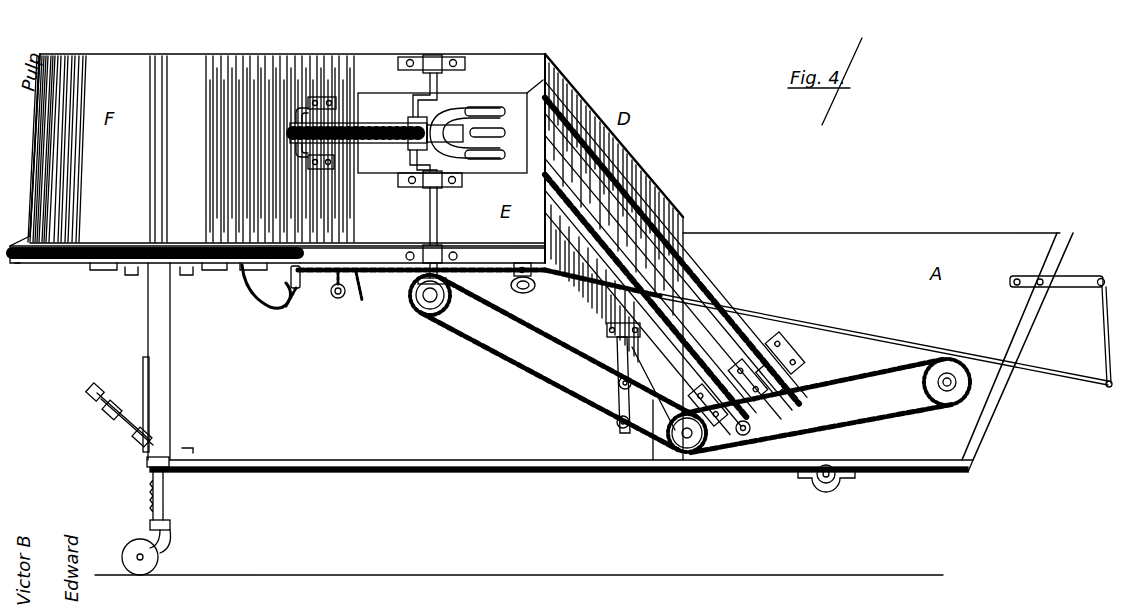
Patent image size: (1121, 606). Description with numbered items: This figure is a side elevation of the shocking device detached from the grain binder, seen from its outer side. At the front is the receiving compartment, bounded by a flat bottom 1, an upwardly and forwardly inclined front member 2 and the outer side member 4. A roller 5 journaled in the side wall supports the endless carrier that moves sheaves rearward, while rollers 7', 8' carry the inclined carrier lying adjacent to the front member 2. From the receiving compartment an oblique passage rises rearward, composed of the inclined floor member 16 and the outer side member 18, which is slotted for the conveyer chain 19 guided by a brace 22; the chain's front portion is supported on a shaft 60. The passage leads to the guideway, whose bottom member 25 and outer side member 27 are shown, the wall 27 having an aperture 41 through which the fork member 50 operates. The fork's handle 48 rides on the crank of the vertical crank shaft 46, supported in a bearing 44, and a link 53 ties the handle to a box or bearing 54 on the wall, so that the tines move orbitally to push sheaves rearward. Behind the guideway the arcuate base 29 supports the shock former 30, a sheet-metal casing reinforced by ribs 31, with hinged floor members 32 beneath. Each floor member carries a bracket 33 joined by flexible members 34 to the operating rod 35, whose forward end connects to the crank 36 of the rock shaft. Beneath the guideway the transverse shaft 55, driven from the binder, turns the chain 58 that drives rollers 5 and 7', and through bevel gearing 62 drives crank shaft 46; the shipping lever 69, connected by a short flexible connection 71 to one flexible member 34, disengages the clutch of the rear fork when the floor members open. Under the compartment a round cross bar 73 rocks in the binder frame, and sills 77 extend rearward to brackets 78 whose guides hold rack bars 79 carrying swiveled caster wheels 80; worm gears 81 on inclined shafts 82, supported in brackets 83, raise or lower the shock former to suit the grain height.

The flat bottom 1 is at (912, 468).
The inclined front member 2 is at (993, 405).
The outer side member 4 is at (871, 258).
The roller 5 is at (688, 438).
The roller 7' is at (947, 400).
The roller 8' is at (1047, 270).
The inclined floor member 16 is at (573, 300).
The outer side member 18 is at (648, 197).
The conveyer chain 19 is at (707, 283).
The brace 22 is at (663, 235).
The bottom member 25 is at (390, 247).
The outer side member 27 is at (500, 62).
The arcuate base 29 is at (84, 262).
The shock former 30 is at (286, 148).
The external ribs or braces 31 is at (30, 178).
The floor member 32 is at (33, 268).
The bracket 33 is at (262, 282).
The flexible member 34 is at (297, 292).
The operating rod 35 is at (916, 343).
The crank 36 is at (1102, 321).
The aperture 41 is at (380, 95).
The bearing 44 is at (434, 57).
The crank shaft 46 is at (438, 231).
The handle 48 is at (380, 140).
The fork member 50 is at (498, 147).
The link 53 is at (298, 155).
The box or bearing 54 is at (320, 170).
The shaft 55 is at (424, 316).
The chain or link belt 58 is at (533, 372).
The shaft 60 is at (790, 351).
The bevel gearing 62 is at (410, 283).
The shipping lever 69 is at (346, 300).
The short flexible connection 71 is at (361, 318).
The cross bar 73 is at (829, 484).
The frame member or sill 77 is at (423, 470).
The bracket 78 is at (170, 393).
The rack bar 79 is at (165, 498).
The swiveled caster wheel 80 is at (170, 544).
The worm gear 81 is at (142, 458).
The inclined shaft 82 is at (117, 420).
The bracket 83 is at (138, 390).